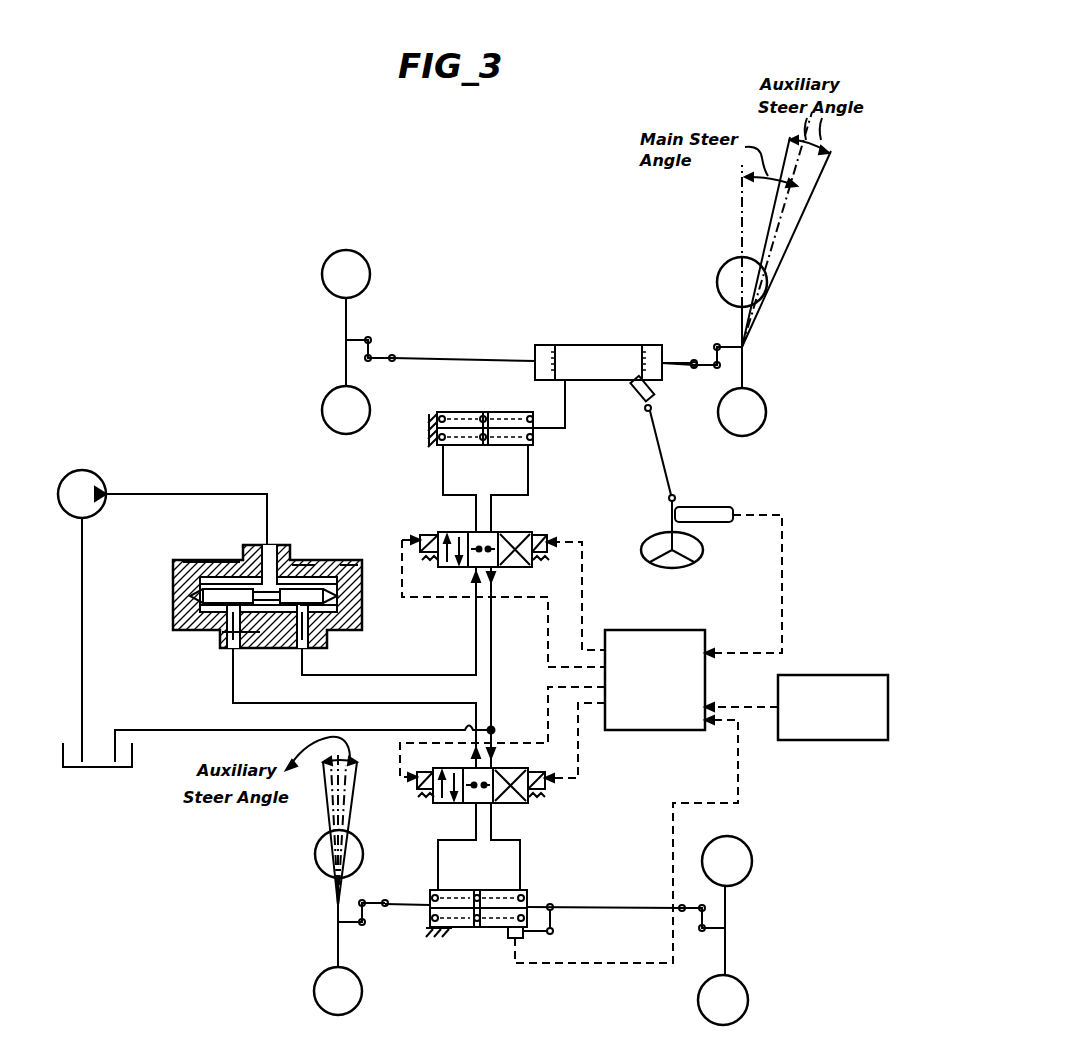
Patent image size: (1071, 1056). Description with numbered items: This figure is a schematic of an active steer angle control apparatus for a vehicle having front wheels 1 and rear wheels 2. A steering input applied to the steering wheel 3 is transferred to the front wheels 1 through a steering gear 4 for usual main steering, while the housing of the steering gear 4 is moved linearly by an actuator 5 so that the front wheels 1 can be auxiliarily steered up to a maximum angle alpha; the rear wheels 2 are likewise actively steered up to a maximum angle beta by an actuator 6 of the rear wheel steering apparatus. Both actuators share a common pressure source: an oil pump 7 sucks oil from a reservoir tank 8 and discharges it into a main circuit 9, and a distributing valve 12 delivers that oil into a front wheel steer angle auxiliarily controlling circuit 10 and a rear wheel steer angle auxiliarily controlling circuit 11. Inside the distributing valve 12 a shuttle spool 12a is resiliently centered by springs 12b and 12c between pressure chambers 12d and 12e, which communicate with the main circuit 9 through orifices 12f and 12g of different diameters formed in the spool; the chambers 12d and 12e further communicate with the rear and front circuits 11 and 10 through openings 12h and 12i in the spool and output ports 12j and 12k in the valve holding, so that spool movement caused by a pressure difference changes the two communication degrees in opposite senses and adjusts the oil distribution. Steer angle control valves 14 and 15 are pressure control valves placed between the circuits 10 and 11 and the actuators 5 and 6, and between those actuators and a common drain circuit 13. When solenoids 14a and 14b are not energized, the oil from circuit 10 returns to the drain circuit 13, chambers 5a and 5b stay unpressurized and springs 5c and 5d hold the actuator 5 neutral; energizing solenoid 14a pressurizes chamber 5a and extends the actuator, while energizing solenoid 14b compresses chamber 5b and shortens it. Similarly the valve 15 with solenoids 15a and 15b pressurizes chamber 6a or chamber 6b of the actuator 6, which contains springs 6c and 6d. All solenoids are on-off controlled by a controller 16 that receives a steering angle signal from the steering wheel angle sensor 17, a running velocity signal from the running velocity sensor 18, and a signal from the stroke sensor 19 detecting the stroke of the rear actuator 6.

The front wheels 1 is at (370, 264).
The rear wheels 2 is at (313, 989).
The steering wheel 3 is at (672, 568).
The steering gear 4 is at (572, 345).
The actuator 5 is at (447, 412).
The chamber 5a is at (467, 447).
The chamber 5b is at (508, 447).
The spring 5c is at (467, 412).
The spring 5d is at (515, 413).
The actuator 6 is at (471, 940).
The chamber 6a is at (456, 930).
The chamber 6b is at (493, 929).
The spring 6c is at (458, 890).
The spring 6d is at (497, 890).
The oil pump 7 is at (98, 472).
The reservoir tank 8 is at (133, 755).
The main circuit 9 is at (212, 494).
The front wheel steer angle auxiliarily controlling circuit 10 is at (437, 675).
The rear wheel steer angle auxiliarily controlling circuit 11 is at (420, 702).
The distributing valve 12 is at (323, 555).
The shuttle spool 12a is at (222, 567).
The spring 12b is at (198, 625).
The spring 12c is at (352, 593).
The pressure chamber 12d is at (175, 593).
The pressure chamber 12e is at (342, 562).
The orifice 12f is at (260, 548).
The orifice 12g is at (297, 558).
The opening 12h is at (222, 637).
The opening 12i is at (318, 630).
The output port 12j is at (237, 637).
The output port 12k is at (303, 640).
The common drain circuit 13 is at (494, 662).
The steer angle control valve 14 is at (523, 522).
The solenoid 14a is at (424, 532).
The solenoid 14b is at (547, 536).
The steer angle control valve 15 is at (515, 808).
The solenoid 15a is at (501, 742).
The solenoid 15b is at (572, 750).
The controller 16 is at (705, 634).
The steering wheel angle sensor 17 is at (702, 506).
The running velocity sensor 18 is at (823, 675).
The stroke sensor 19 is at (522, 938).